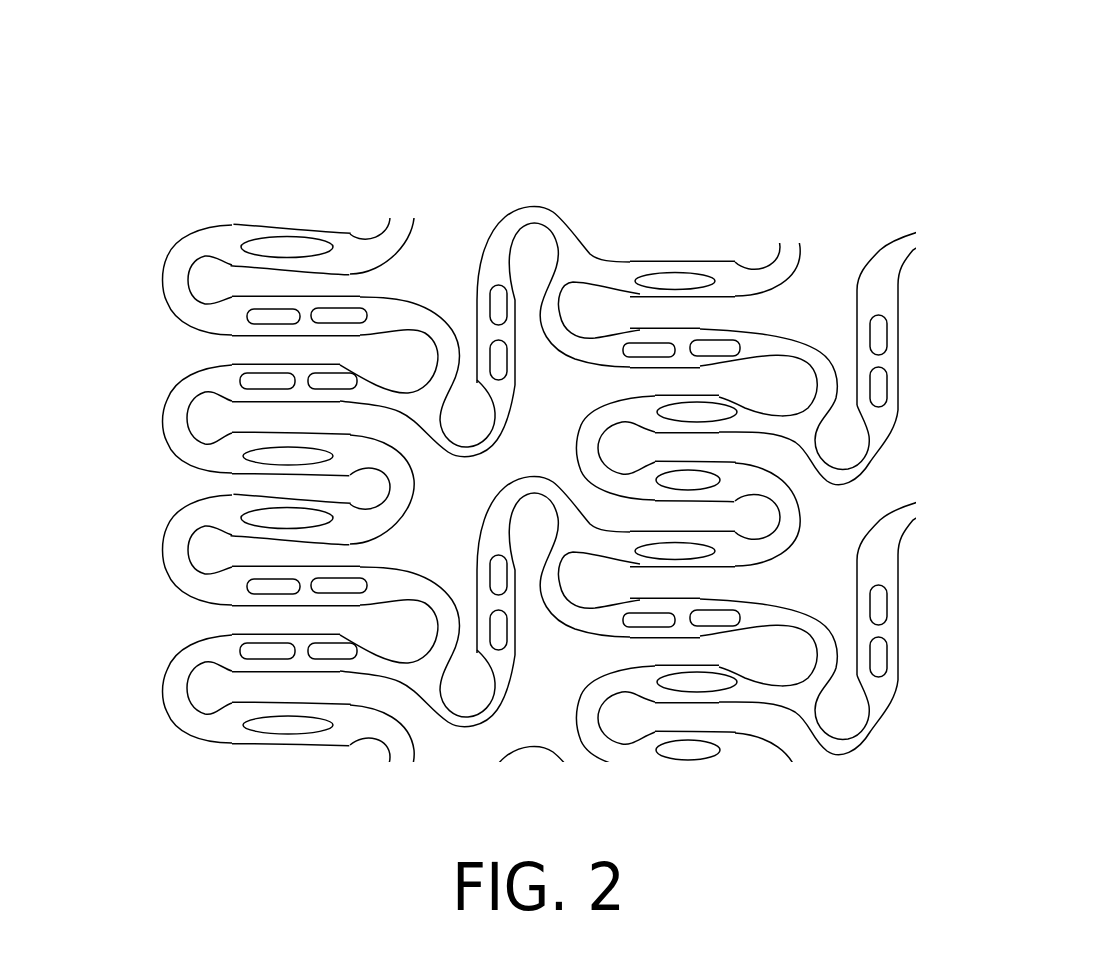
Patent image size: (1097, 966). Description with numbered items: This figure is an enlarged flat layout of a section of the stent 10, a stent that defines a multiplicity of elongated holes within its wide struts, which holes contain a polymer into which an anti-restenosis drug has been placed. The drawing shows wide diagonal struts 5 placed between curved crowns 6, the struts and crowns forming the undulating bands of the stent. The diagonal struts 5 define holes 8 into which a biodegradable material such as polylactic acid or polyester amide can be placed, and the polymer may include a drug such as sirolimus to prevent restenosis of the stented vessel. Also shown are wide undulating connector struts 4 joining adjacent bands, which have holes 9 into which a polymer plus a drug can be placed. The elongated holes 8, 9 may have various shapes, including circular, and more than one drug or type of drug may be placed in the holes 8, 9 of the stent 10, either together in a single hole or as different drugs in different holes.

The undulating connector struts 4 is at (488, 240).
The diagonal struts 5 is at (298, 229).
The curved crowns 6 is at (437, 358).
The holes 8 is at (662, 350).
The holes 9 is at (498, 356).
The stent 10 is at (731, 98).